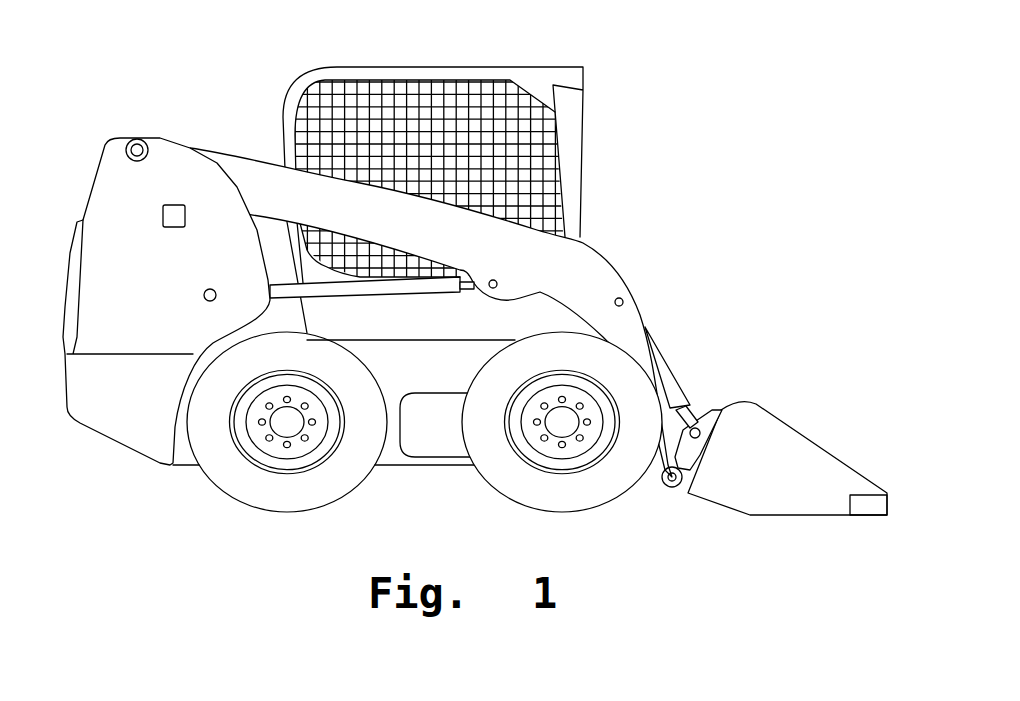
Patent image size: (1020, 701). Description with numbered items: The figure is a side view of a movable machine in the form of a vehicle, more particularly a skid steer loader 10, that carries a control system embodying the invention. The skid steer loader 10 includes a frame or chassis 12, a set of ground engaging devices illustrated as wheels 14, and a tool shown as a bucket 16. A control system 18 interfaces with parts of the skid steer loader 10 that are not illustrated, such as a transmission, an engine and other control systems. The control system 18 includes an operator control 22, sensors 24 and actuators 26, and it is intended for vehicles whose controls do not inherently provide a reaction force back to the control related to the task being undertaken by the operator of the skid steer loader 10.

The skid steer loader 10 is at (682, 100).
The frame or chassis 12 is at (410, 465).
The wheels 14 is at (595, 500).
The bucket 16 is at (822, 446).
The control system 18 is at (645, 220).
The operator control 22 is at (585, 187).
The sensors 24 is at (163, 212).
The actuators 26 is at (672, 380).